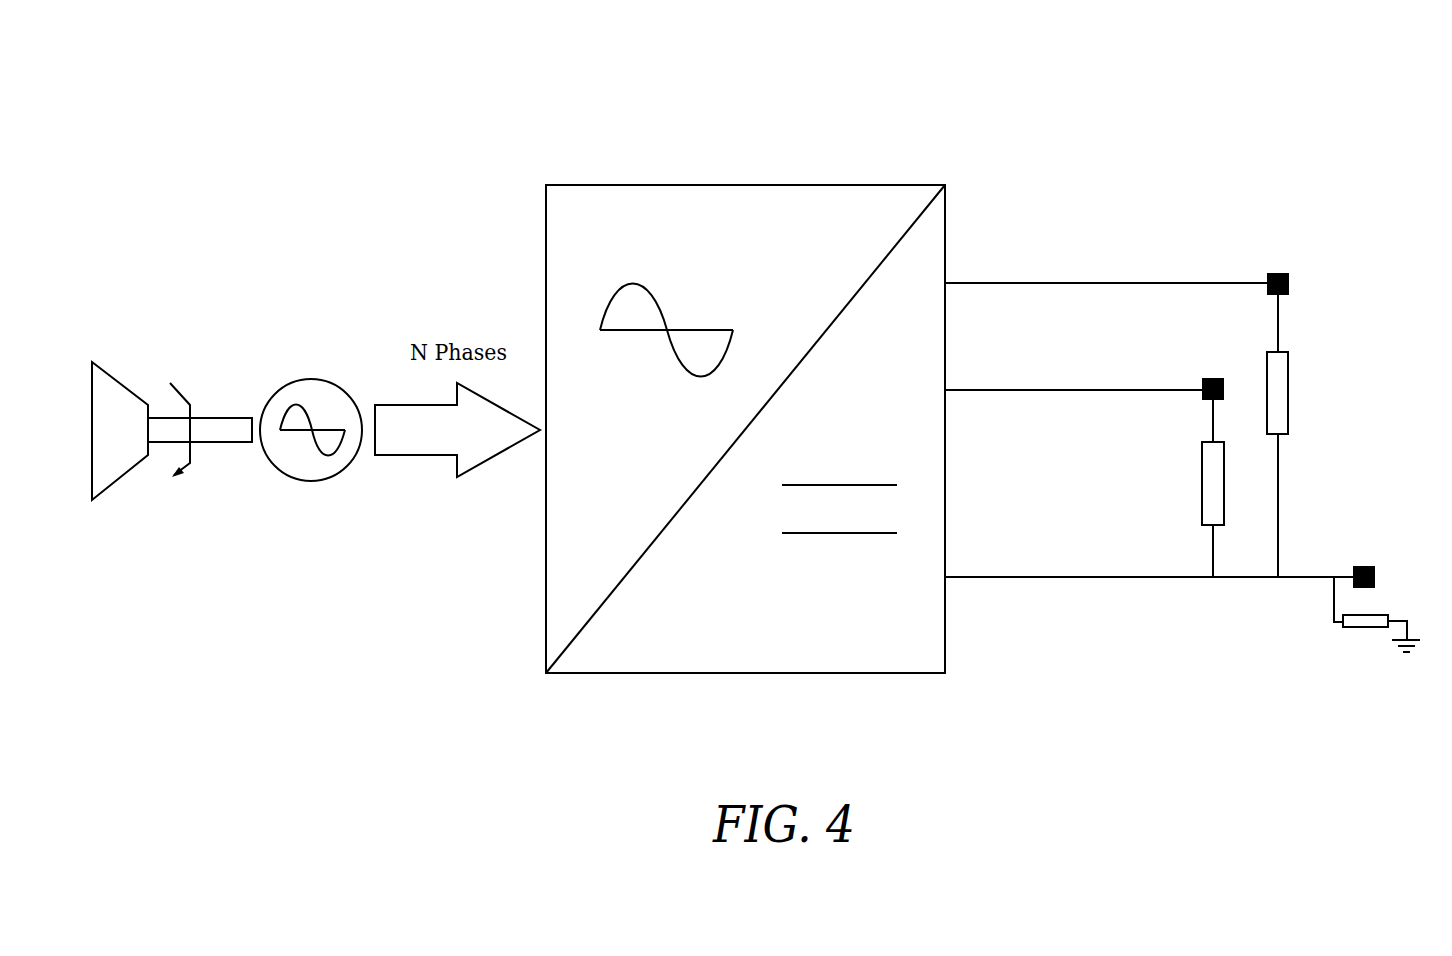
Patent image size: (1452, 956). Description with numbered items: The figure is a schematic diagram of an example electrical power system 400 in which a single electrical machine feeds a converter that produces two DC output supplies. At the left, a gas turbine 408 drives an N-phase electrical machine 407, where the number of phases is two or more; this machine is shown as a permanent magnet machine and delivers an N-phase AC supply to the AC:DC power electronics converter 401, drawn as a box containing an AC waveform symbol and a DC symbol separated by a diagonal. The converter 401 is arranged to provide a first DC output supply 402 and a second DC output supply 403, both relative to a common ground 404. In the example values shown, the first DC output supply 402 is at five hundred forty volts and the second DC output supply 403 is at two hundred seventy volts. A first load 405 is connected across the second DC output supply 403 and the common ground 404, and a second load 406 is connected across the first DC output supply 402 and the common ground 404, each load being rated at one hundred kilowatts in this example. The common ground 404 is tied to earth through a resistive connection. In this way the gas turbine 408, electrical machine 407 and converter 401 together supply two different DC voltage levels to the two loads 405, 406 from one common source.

The electrical power system 400 is at (460, 66).
The AC:DC power electronics converter 401 is at (745, 185).
The first DC output supply 402 is at (1289, 284).
The second DC output supply 403 is at (1203, 402).
The common ground 404 is at (1362, 565).
The first load 405 is at (1202, 510).
The second load 406 is at (1288, 370).
The N-phase electrical machine 407 is at (312, 379).
The gas turbine 408 is at (120, 473).